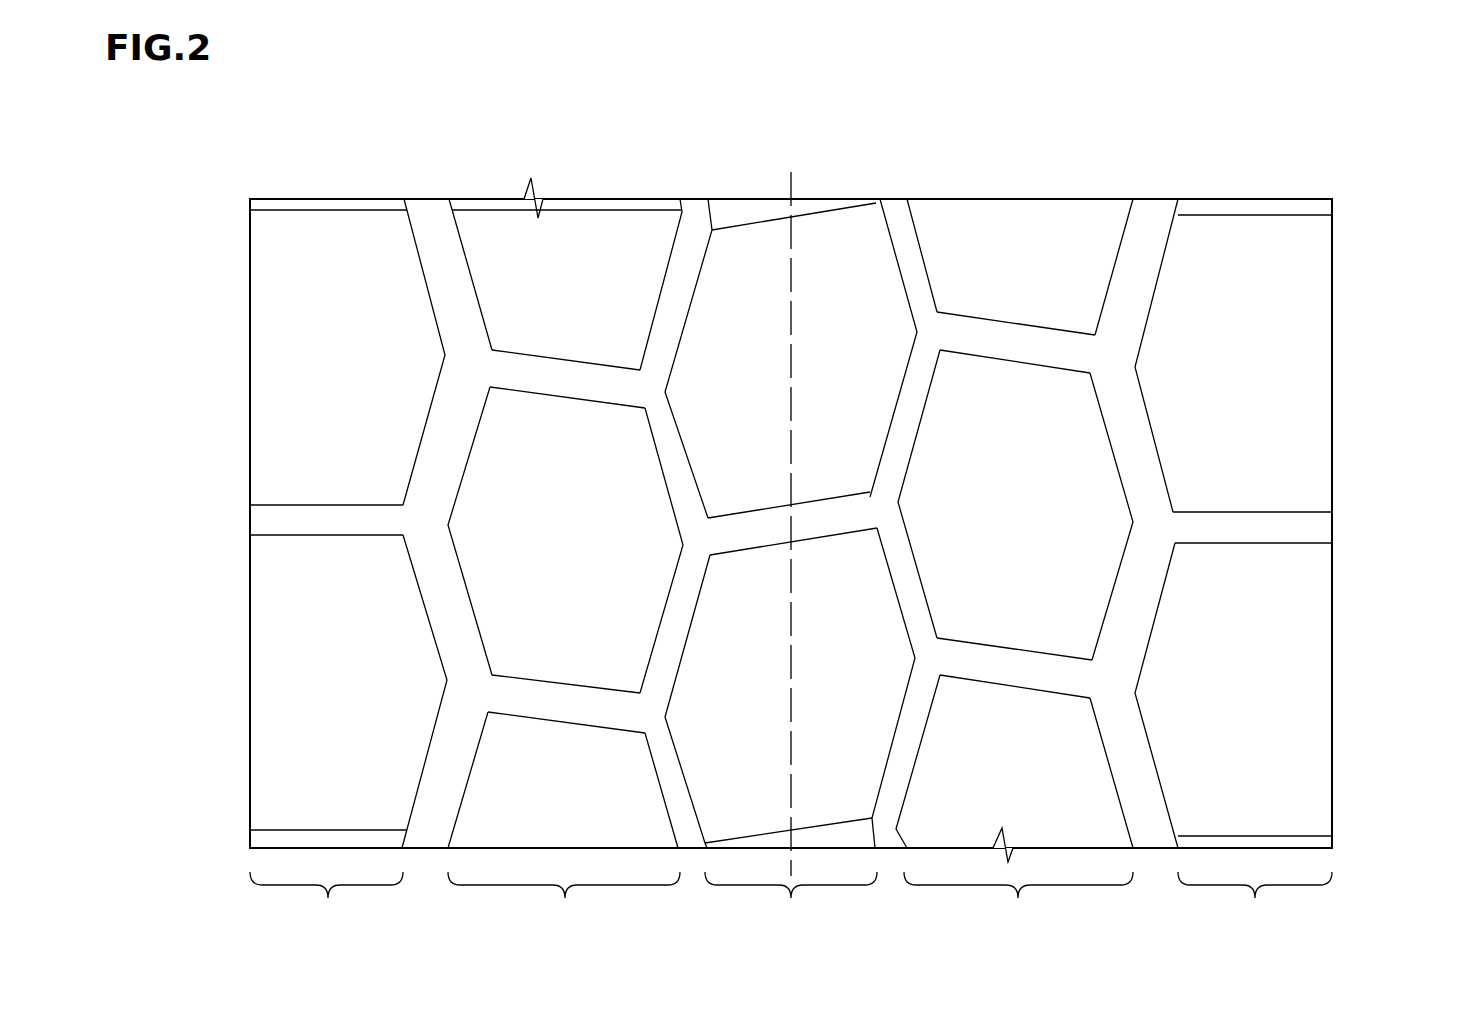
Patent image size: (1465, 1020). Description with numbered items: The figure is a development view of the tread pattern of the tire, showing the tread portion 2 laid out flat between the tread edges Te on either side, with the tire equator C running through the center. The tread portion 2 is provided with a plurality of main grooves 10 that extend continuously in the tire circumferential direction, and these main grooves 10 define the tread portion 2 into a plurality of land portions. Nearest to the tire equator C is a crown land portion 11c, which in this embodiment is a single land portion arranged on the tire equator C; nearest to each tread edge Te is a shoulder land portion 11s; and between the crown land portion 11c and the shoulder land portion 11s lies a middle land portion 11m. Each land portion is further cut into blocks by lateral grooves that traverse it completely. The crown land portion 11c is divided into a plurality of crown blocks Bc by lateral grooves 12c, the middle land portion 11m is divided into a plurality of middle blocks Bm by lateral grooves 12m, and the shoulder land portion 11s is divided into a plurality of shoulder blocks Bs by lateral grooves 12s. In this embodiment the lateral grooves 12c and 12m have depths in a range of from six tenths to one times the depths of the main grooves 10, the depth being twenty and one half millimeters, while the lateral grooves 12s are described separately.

The tread portion 2 is at (992, 178).
The main grooves 10 is at (432, 232).
The lateral grooves 12s is at (327, 520).
The lateral grooves 12m is at (570, 703).
The lateral grooves 12c is at (751, 527).
The shoulder land portion 11s is at (791, 904).
The middle land portion 11m is at (790, 904).
The crown land portion 11c is at (791, 904).
The shoulder blocks Bs is at (312, 362).
The middle blocks Bm is at (546, 550).
The crown blocks Bc is at (833, 347).
The tire equator C is at (792, 507).
The tread edge Te is at (250, 255).